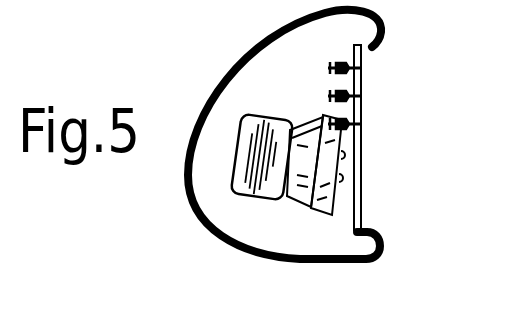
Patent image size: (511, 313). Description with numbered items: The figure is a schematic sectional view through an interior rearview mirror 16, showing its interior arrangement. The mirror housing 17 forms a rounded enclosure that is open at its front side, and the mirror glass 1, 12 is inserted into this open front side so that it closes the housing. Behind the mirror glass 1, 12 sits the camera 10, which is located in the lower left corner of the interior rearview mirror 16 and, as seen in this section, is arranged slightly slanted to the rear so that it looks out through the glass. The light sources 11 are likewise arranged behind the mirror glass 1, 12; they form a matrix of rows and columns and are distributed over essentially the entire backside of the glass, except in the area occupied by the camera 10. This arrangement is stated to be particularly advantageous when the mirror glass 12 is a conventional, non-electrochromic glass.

The interior rearview mirror 16 is at (191, 63).
The mirror housing 17 is at (187, 201).
The mirror glass 1 is at (419, 138).
The mirror glass 12 is at (357, 108).
The light sources 11 is at (352, 85).
The camera 10 is at (268, 175).